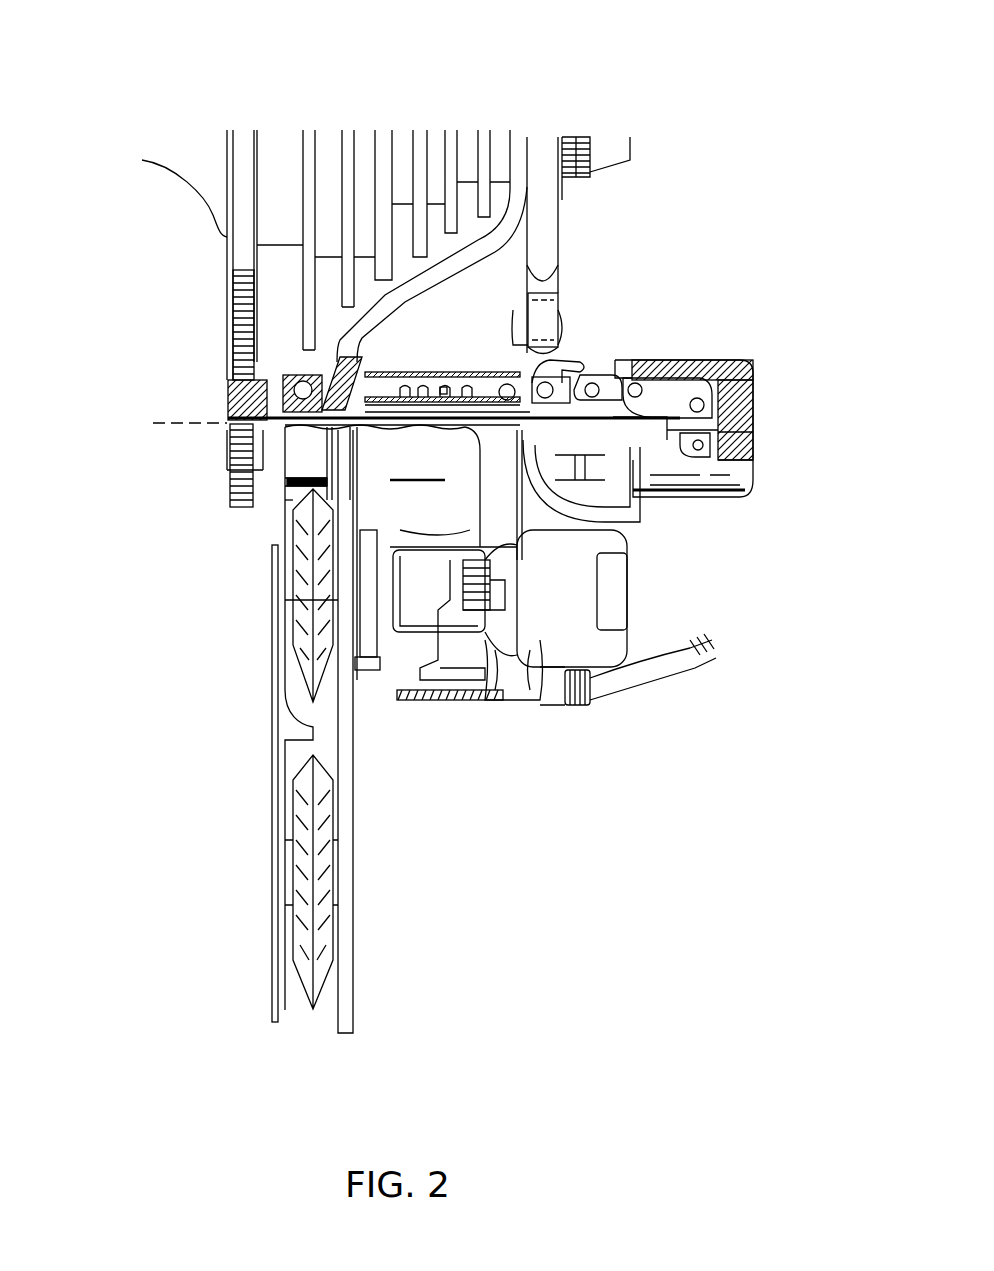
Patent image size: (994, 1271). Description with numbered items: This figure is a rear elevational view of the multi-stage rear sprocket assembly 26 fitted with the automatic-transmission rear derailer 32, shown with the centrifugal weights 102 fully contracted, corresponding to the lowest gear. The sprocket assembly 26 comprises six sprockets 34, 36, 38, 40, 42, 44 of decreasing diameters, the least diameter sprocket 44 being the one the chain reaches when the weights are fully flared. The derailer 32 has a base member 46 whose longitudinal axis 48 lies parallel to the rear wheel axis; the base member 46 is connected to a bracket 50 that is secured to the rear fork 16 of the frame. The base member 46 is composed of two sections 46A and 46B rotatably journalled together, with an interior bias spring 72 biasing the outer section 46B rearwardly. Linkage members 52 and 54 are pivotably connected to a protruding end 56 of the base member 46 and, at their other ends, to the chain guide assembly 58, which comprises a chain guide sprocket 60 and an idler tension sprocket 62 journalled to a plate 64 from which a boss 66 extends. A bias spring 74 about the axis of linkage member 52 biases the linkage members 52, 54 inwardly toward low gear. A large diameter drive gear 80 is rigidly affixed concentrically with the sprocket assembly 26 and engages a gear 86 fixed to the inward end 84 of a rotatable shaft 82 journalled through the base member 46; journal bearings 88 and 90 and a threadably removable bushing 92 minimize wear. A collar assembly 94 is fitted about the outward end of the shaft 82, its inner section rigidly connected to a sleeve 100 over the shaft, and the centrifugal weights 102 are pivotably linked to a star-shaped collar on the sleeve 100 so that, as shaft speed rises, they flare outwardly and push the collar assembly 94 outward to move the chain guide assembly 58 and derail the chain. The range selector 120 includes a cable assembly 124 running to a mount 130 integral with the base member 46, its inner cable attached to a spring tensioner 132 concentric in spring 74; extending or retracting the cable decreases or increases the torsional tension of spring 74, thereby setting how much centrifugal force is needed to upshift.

The rear fork 16 is at (542, 217).
The multi-stage rear sprocket assembly 26 is at (541, 48).
The rear derailer 32 is at (817, 547).
The sprocket 34 is at (303, 152).
The sprocket 36 is at (350, 150).
The sprocket 38 is at (383, 140).
The sprocket 40 is at (420, 143).
The sprocket 42 is at (452, 155).
The least diameter sprocket 44 is at (487, 157).
The base member 46 is at (447, 368).
The inner section of base member 46A is at (207, 540).
The outer section of base member 46B is at (448, 452).
The longitudinal axis 48 is at (153, 423).
The bracket 50 is at (502, 260).
The linkage member 52 is at (415, 590).
The linkage member 54 is at (610, 578).
The protruding end 56 is at (567, 608).
The chain guide assembly 58 is at (435, 882).
The chain guide sprocket 60 is at (295, 645).
The idler tension sprocket 62 is at (296, 953).
The plate 64 is at (285, 728).
The boss 66 is at (345, 608).
The interior bias spring 72 is at (398, 350).
The bias spring 74 is at (490, 590).
The large diameter drive gear 80 is at (240, 260).
The rotatable shaft 82 is at (637, 433).
The inward end 84 is at (227, 425).
The gear 86 is at (233, 488).
The journal bearing 88 is at (283, 380).
The journal bearing 90 is at (485, 370).
The threadably removable bushing 92 is at (392, 418).
The collar assembly 94 is at (582, 346).
The sleeve 100 is at (607, 507).
The centrifugal weights 102 is at (753, 360).
The range selector 120 is at (588, 760).
The cable assembly 124 is at (622, 690).
The mount 130 is at (522, 680).
The spring tensioner 132 is at (425, 700).